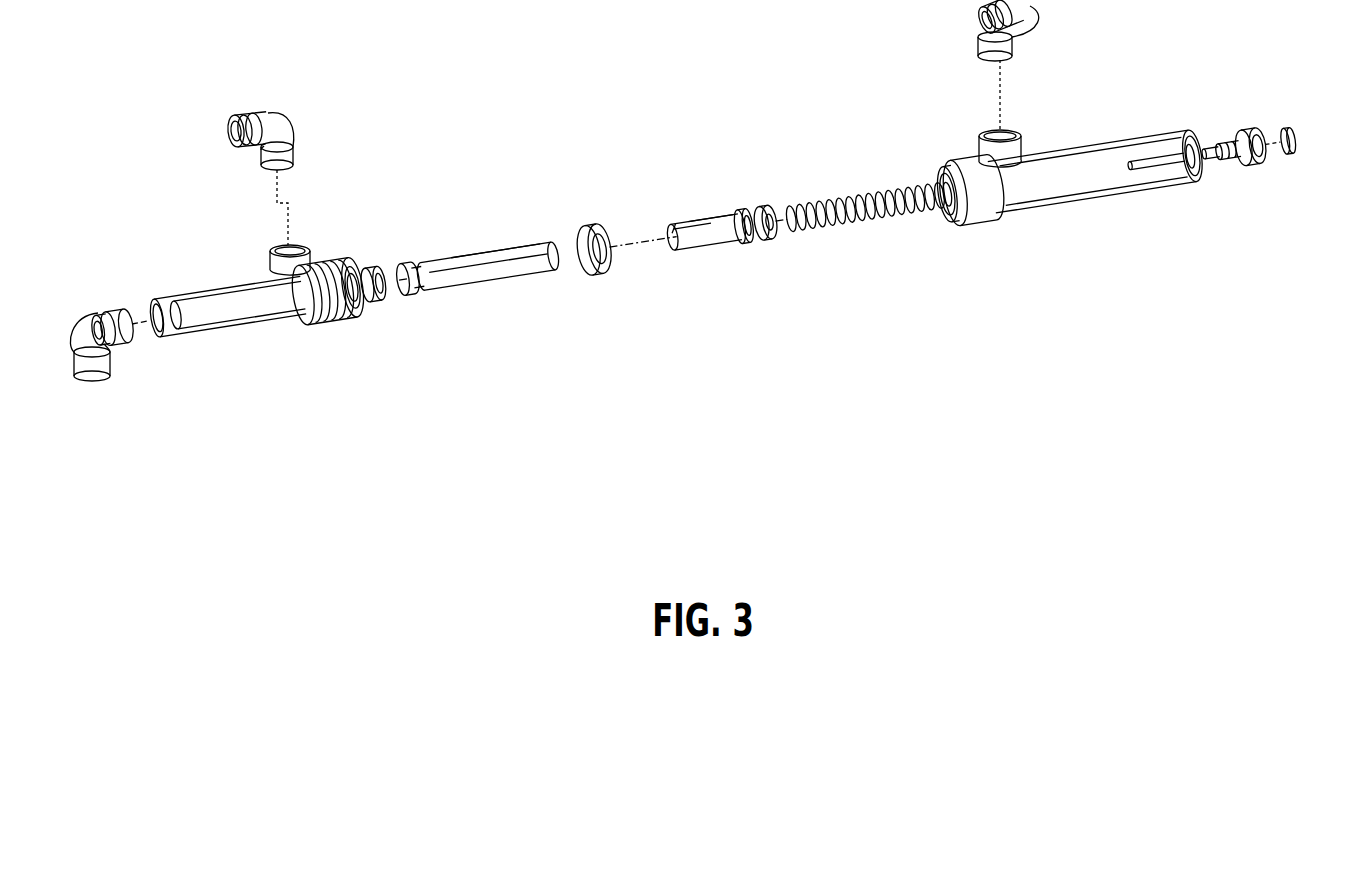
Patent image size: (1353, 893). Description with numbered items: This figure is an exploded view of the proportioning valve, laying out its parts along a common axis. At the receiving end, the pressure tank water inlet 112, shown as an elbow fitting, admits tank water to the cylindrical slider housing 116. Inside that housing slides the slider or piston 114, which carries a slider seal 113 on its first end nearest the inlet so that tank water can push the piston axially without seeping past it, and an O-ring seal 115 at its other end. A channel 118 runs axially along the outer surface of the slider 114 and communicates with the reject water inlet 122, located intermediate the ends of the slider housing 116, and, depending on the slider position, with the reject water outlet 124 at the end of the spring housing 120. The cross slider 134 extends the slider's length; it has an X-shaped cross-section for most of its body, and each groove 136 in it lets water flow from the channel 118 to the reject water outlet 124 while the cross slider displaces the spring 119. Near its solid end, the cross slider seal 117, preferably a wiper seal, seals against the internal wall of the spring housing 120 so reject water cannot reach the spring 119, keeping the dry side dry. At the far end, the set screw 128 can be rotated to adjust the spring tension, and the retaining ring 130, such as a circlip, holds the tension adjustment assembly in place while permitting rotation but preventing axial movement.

The pressure tank water inlet 112 is at (98, 380).
The slider seal 113 is at (380, 307).
The slider 114 is at (470, 287).
The O-ring seal 115 is at (597, 277).
The slider housing 116 is at (247, 335).
The cross slider seal 117 is at (767, 243).
The channel 118 is at (487, 260).
The spring 119 is at (870, 220).
The spring housing 120 is at (1130, 193).
The reject water inlet 122 is at (290, 130).
The reject water outlet 124 is at (1035, 20).
The set screw 128 is at (1240, 157).
The retaining ring 130 is at (1287, 150).
The cross slider 134 is at (723, 250).
The groove 136 is at (727, 220).